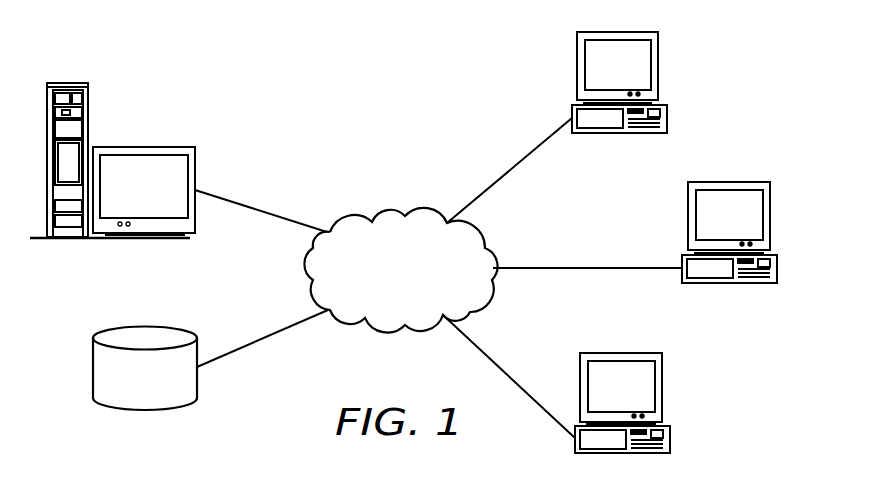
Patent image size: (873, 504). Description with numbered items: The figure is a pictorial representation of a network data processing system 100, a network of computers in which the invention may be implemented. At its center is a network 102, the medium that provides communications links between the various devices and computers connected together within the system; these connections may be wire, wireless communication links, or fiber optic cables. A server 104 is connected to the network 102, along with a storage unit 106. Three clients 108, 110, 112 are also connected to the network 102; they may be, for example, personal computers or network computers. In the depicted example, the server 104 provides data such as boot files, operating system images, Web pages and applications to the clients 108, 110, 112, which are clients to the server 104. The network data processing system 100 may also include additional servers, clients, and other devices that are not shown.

The network data processing system 100 is at (278, 73).
The network 102 is at (418, 294).
The server 104 is at (88, 103).
The storage unit 106 is at (93, 369).
The client 108 is at (658, 72).
The client 110 is at (770, 218).
The client 112 is at (662, 392).